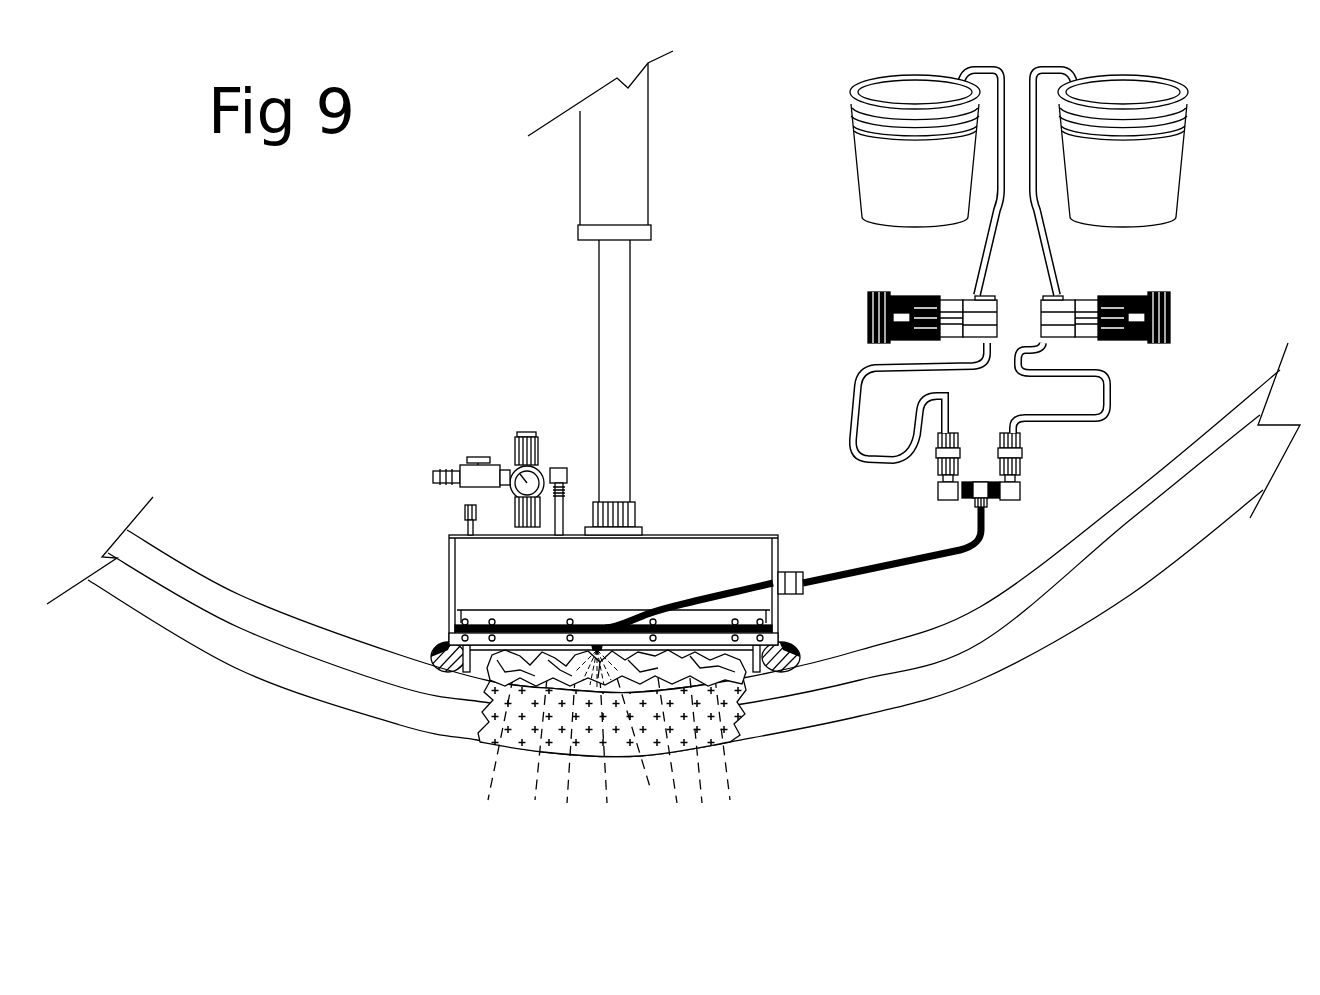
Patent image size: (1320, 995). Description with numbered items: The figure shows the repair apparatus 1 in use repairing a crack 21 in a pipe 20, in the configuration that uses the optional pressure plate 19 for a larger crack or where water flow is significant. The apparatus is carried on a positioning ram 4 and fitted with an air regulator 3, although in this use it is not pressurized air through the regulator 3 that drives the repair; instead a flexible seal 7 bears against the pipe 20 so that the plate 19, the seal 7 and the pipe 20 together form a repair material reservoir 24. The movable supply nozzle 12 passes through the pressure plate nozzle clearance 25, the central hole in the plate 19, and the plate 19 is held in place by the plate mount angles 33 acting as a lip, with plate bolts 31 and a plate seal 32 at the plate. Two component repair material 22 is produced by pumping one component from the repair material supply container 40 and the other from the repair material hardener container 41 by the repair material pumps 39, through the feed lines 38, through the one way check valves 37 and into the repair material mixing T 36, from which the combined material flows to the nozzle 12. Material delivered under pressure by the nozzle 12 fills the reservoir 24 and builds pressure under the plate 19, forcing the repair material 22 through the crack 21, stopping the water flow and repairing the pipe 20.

The repair apparatus 1 is at (670, 530).
The air regulator 3 is at (508, 458).
The positioning ram 4 is at (627, 322).
The flexible seal 7 is at (430, 667).
The movable supply nozzle 12 is at (873, 560).
The optional pressure plate 19 is at (450, 630).
The pipe 20 is at (817, 712).
The crack 21 is at (497, 713).
The repair material 22 is at (712, 690).
The repair material reservoir 24 is at (737, 660).
The pressure plate nozzle clearance 25 is at (593, 632).
The plate bolts 31 is at (492, 620).
The plate seal 32 is at (452, 637).
The plate mount angles 33 is at (455, 627).
The repair material mixing T 36 is at (990, 500).
The one way check valves 37 is at (935, 465).
The feed lines 38 is at (1020, 418).
The repair material pumps 39 is at (862, 310).
The repair material supply container 40 is at (925, 182).
The repair material hardener container 41 is at (1110, 182).